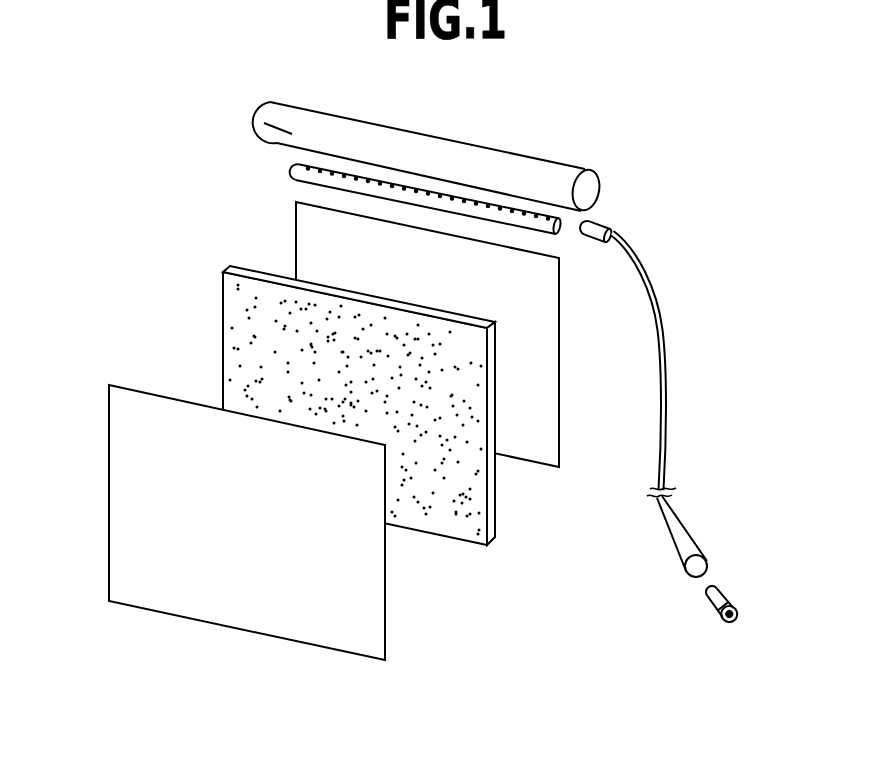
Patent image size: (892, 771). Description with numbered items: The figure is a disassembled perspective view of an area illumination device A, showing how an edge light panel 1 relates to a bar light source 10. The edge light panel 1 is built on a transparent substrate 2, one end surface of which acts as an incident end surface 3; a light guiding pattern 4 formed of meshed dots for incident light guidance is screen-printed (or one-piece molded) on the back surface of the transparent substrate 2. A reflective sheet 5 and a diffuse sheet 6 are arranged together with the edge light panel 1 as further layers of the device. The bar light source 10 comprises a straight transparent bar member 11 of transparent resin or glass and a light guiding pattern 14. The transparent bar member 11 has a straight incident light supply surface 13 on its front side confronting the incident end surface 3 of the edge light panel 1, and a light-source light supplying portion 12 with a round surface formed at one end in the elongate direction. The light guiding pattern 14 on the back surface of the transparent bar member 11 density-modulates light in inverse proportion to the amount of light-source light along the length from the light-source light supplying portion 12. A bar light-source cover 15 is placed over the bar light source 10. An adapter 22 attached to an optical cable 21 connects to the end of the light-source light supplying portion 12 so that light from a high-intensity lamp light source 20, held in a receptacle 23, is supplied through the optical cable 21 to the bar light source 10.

The edge light panel 1 is at (495, 533).
The transparent substrate 2 is at (497, 425).
The incident end surface 3 is at (339, 417).
The light guiding pattern 4 is at (428, 523).
The reflective sheet 5 is at (522, 458).
The diffuse sheet 6 is at (370, 625).
The bar light source 10 is at (339, 183).
The transparent bar member 11 is at (303, 182).
The light-source light supplying portion 12 is at (560, 224).
The incident light supply surface 13 is at (528, 228).
The light guiding pattern 14 is at (309, 162).
The bar light-source cover 15 is at (423, 136).
The lamp light source 20 is at (725, 597).
The optical cable 21 is at (645, 270).
The adapter 22 is at (603, 222).
The receptacle 23 is at (695, 543).
The area illumination device A is at (562, 555).